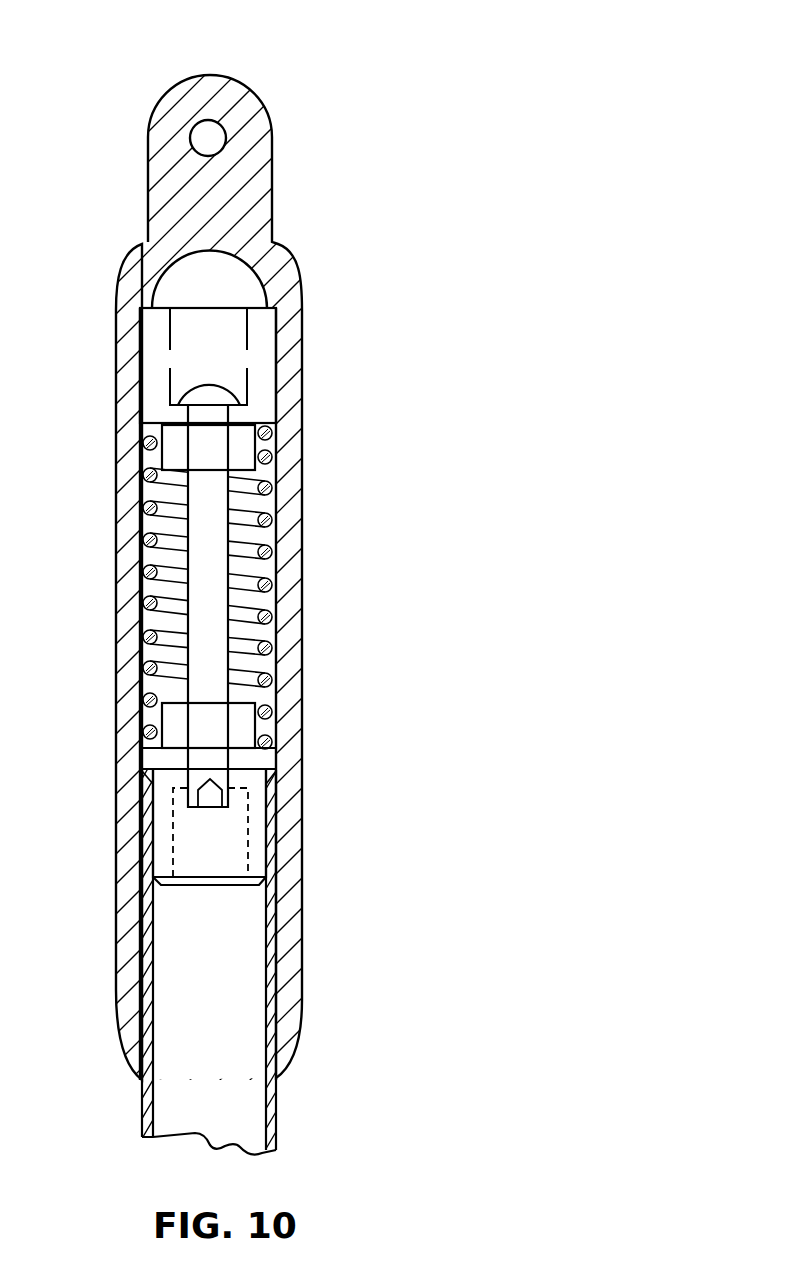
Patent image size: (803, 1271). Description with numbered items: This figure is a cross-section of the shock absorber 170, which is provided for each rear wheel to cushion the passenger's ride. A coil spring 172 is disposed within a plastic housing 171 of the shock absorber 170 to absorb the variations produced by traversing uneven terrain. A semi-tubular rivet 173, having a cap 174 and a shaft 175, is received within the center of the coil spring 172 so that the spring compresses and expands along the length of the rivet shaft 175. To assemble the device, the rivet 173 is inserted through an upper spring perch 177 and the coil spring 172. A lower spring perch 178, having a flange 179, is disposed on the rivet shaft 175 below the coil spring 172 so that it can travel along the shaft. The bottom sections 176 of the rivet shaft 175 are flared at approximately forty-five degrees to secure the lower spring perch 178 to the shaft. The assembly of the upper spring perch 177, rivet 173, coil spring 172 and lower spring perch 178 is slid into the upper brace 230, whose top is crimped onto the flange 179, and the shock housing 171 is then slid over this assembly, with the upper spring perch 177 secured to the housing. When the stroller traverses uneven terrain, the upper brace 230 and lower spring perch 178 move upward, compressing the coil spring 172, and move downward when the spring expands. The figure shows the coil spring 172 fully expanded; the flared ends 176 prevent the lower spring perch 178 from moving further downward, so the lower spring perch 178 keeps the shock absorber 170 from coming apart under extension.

The shock absorber 170 is at (382, 75).
The plastic housing 171 is at (275, 270).
The coil spring 172 is at (150, 521).
The semi-tubular rivet 173 is at (253, 411).
The cap 174 is at (200, 390).
The shaft 175 is at (217, 608).
The bottom sections 176 is at (228, 798).
The upper spring perch 177 is at (265, 392).
The lower spring perch 178 is at (252, 830).
The flange 179 is at (157, 758).
The upper brace 230 is at (145, 950).